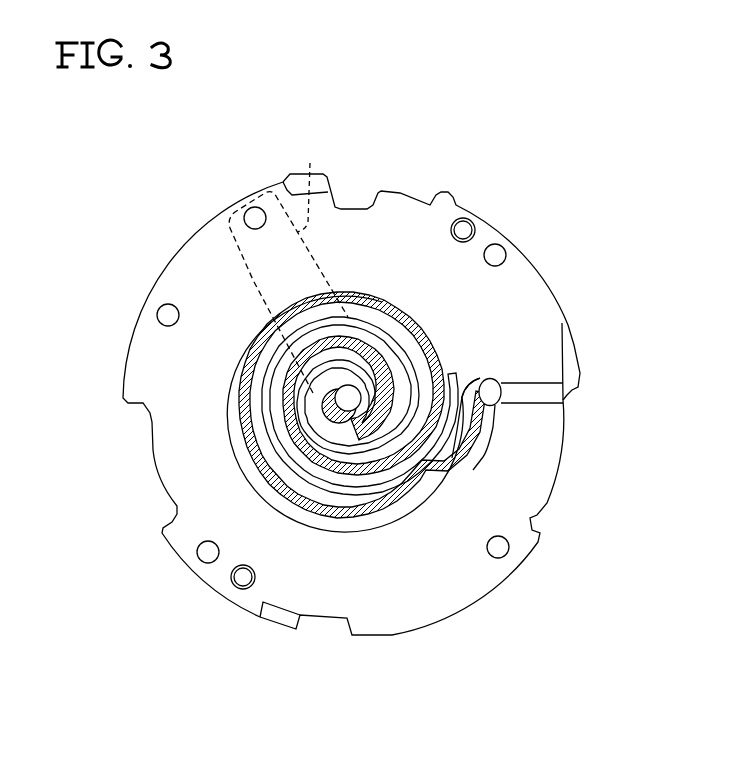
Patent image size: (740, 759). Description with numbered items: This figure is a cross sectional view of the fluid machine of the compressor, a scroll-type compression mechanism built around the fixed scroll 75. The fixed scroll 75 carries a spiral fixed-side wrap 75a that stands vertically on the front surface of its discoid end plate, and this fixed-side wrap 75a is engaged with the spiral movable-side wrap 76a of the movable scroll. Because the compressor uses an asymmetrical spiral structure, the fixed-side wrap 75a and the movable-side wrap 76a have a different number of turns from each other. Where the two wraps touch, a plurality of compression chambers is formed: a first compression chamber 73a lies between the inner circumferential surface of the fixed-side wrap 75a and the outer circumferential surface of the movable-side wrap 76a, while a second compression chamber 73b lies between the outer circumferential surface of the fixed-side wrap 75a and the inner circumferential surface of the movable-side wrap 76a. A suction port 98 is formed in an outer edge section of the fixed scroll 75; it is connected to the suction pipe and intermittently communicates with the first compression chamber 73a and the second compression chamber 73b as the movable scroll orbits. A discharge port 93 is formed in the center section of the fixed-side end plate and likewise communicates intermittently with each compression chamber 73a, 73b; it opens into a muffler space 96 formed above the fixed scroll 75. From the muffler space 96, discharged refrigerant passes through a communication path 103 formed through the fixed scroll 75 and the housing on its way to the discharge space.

The fixed scroll 75 is at (497, 222).
The fixed-side wrap 75a is at (452, 435).
The first compression chamber 73a is at (390, 425).
The second compression chamber 73b is at (373, 367).
The movable-side wrap 76a is at (362, 513).
The discharge port 93 is at (320, 397).
The muffler space 96 is at (310, 182).
The suction port 98 is at (494, 381).
The communication path 103 is at (254, 206).